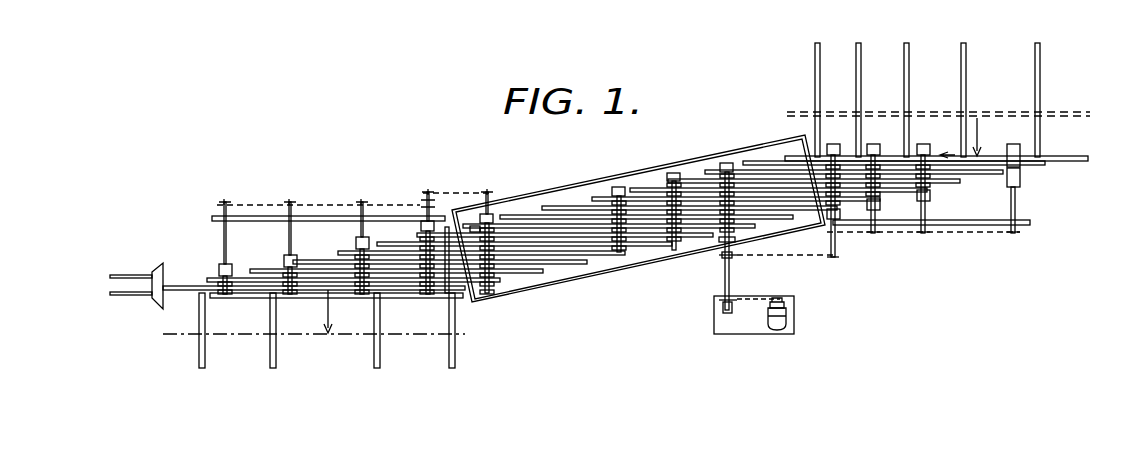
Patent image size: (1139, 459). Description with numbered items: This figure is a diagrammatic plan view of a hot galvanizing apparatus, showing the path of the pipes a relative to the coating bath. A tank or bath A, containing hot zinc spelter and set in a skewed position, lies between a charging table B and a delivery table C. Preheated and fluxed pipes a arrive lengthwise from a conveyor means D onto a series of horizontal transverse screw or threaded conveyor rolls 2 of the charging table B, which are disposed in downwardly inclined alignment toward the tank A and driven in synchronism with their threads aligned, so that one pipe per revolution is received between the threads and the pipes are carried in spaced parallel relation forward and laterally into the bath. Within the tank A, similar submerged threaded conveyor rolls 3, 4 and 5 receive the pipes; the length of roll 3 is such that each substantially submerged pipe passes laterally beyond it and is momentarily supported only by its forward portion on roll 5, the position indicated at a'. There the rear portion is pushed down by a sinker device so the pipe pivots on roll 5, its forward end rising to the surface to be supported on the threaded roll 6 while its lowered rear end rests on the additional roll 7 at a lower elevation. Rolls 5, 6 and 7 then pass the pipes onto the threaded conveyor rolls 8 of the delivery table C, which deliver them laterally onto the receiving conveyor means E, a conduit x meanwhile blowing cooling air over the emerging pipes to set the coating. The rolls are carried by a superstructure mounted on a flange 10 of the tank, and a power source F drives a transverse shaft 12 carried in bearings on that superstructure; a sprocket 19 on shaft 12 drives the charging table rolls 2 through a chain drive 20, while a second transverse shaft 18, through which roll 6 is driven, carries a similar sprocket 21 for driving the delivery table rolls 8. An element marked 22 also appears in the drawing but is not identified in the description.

The screw or threaded conveyor rolls 2 is at (873, 147).
The threaded conveyor roll 3 is at (729, 163).
The threaded conveyor roll 4 is at (677, 173).
The threaded conveyor roll 5 is at (620, 187).
The conveyor screw or threaded roll 6 is at (475, 228).
The additional conveyor roll 7 is at (720, 241).
The threaded conveyor rolls 8 is at (364, 240).
The flange 10 is at (597, 180).
The transverse shaft 12 is at (723, 257).
The transverse shaft 18 is at (490, 214).
The sprocket 19 is at (734, 258).
The chain drive 20 is at (800, 256).
The sprocket 21 is at (488, 190).
The adjusting screw 22 is at (436, 192).
The tank or bath A is at (570, 193).
The charging table B is at (954, 215).
The delivery table C is at (310, 250).
The conveyor means D is at (922, 95).
The receiving conveyor means E is at (355, 352).
The source F is at (742, 326).
The pipes a is at (936, 142).
The pipe position a' is at (786, 238).
The conduit x is at (447, 292).